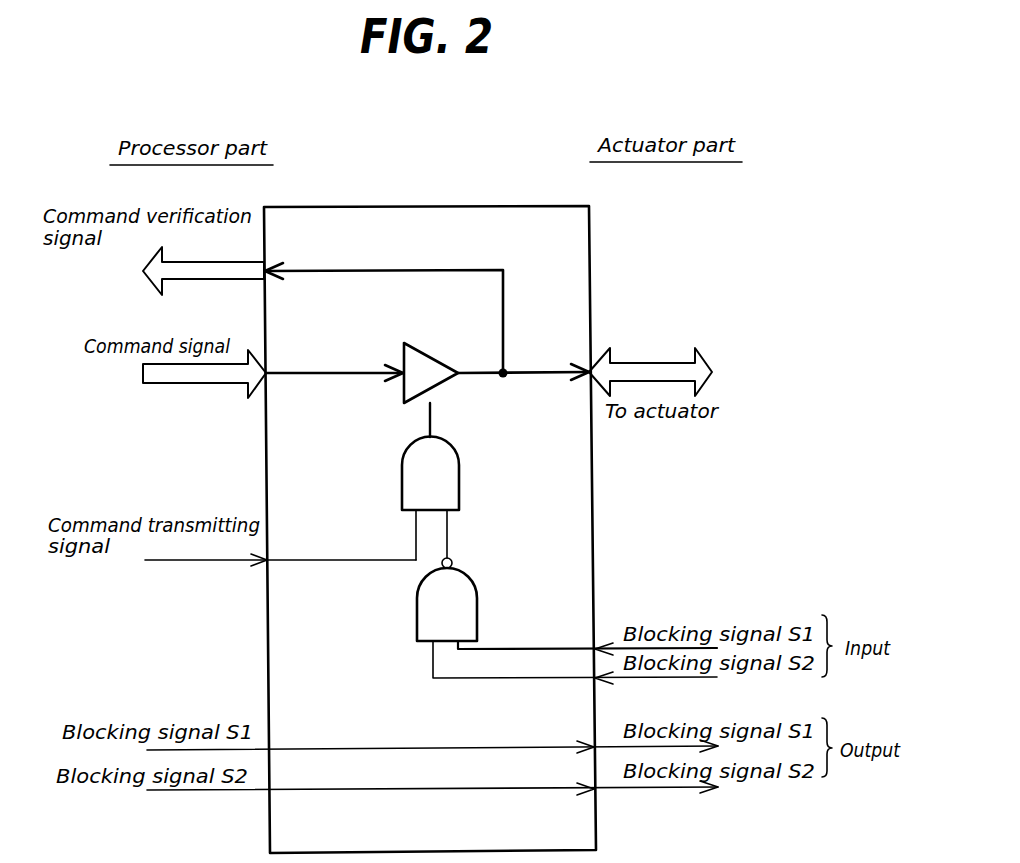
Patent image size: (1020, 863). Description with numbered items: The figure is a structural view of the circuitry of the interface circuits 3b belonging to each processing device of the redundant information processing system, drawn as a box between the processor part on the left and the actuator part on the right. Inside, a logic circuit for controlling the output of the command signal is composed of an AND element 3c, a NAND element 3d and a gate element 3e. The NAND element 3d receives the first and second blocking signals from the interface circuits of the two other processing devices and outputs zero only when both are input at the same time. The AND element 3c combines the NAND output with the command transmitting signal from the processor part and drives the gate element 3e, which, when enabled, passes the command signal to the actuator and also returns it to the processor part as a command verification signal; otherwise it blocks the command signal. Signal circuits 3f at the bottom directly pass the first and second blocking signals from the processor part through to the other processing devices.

The interface circuits 3b is at (459, 204).
The AND element 3c is at (460, 470).
The NAND element 3d is at (477, 608).
The gate element 3e is at (422, 352).
The signal circuits 3f is at (424, 790).